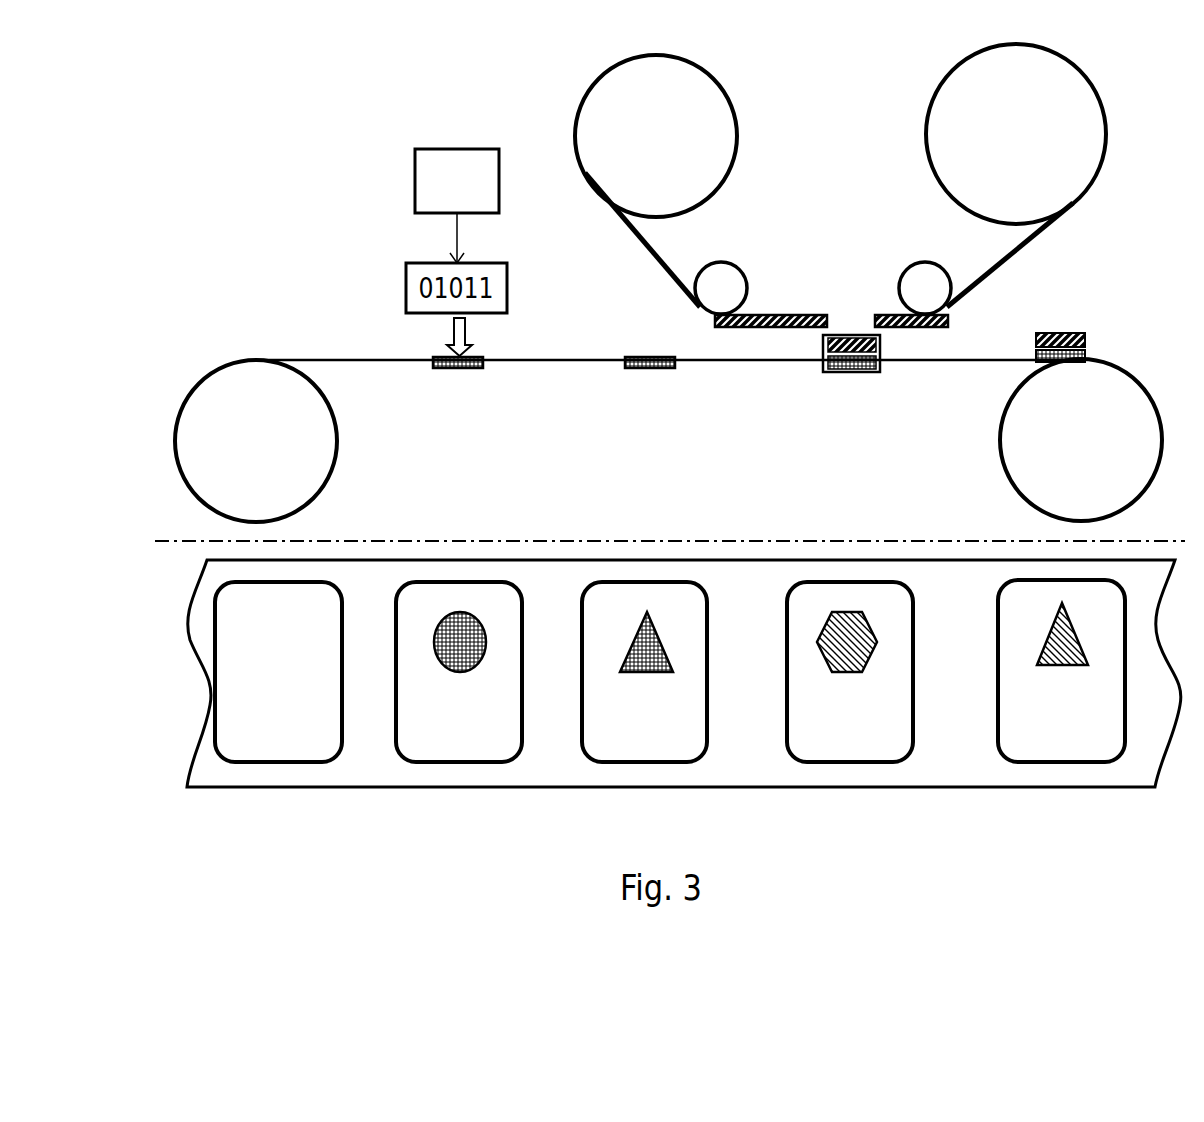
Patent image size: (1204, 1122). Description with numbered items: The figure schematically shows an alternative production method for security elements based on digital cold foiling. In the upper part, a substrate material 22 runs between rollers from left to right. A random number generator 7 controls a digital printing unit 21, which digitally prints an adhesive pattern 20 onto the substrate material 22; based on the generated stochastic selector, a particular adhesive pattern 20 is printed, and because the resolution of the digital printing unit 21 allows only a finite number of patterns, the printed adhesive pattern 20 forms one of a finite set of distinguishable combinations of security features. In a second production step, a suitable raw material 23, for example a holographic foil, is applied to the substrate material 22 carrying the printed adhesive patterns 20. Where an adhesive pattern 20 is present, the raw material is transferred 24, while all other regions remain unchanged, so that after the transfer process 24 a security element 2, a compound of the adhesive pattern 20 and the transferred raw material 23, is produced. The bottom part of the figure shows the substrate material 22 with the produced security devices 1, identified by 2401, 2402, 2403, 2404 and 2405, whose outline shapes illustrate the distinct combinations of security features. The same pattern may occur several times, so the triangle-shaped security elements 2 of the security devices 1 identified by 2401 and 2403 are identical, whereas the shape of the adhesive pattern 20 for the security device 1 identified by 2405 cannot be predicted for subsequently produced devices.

The security device 1 is at (670, 717).
The security element 2 is at (853, 612).
The random number generator 7 is at (415, 178).
The adhesive pattern 20 is at (647, 612).
The digital printing unit 21 is at (467, 352).
The substrate material 22 is at (335, 360).
The raw material 23 is at (772, 315).
The transfer process 24 is at (851, 337).
The security device identifier 2401 is at (1061, 671).
The security device identifier 2402 is at (850, 672).
The security device identifier 2403 is at (644, 672).
The security device identifier 2404 is at (459, 672).
The security device identifier 2405 is at (278, 672).